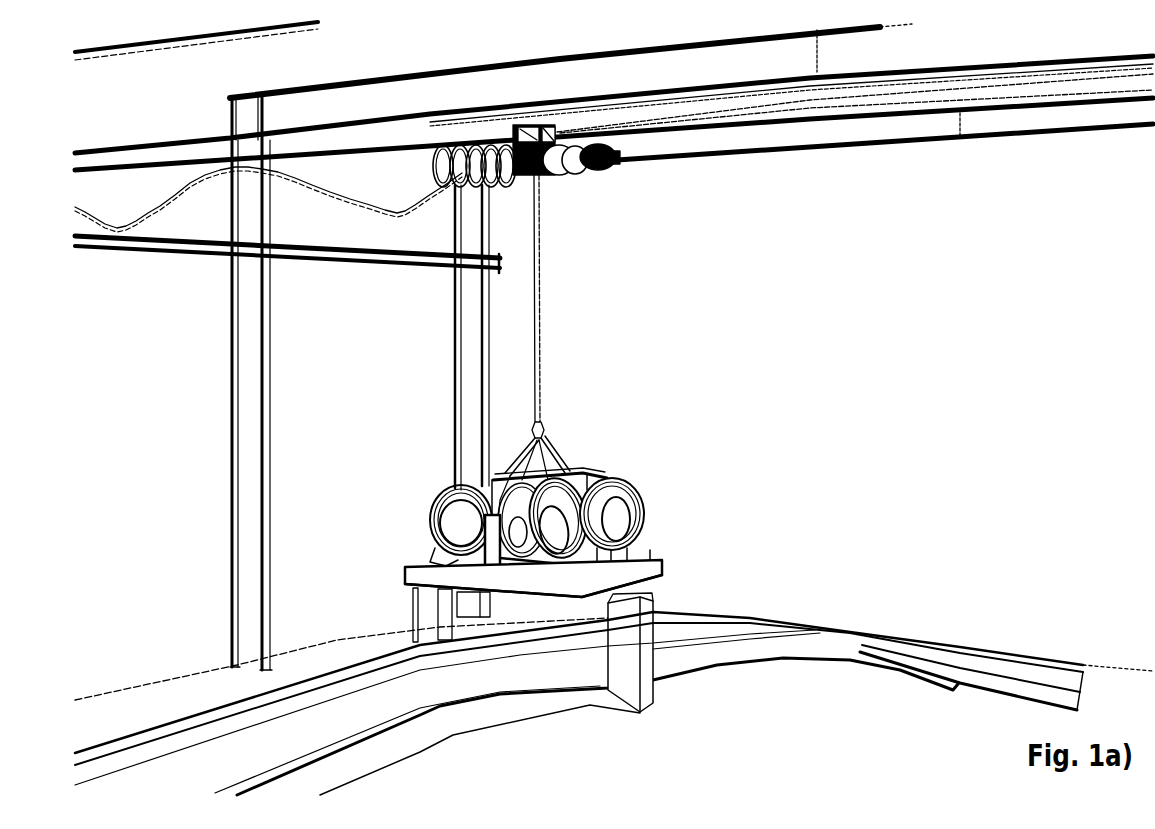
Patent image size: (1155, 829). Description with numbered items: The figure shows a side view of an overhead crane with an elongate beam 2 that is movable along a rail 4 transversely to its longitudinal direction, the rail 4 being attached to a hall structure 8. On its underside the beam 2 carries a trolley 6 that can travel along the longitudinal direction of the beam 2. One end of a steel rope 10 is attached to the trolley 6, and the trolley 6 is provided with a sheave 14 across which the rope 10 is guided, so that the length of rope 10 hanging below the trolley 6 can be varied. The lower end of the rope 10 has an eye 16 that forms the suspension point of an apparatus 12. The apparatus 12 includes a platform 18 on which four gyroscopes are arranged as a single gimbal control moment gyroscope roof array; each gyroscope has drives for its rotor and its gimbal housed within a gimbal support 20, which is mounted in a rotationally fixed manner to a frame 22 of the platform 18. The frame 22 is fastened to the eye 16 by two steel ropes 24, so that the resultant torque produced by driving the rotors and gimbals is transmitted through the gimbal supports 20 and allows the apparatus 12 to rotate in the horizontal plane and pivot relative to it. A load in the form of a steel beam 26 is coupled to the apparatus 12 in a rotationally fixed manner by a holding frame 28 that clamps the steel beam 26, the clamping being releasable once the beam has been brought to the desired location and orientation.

The elongate beam 2 is at (142, 153).
The rail 4 is at (196, 238).
The trolley 6 is at (617, 167).
The hall structure 8 is at (252, 408).
The steel rope 10 is at (537, 323).
The apparatus 12 is at (686, 534).
The sheave 14 is at (543, 177).
The eye 16 is at (543, 432).
The platform 18 is at (403, 578).
The gimbal support 20 is at (517, 520).
The frame 22 is at (577, 473).
The steel ropes 24 is at (524, 457).
The steel beam 26 is at (752, 665).
The holding frame 28 is at (640, 698).